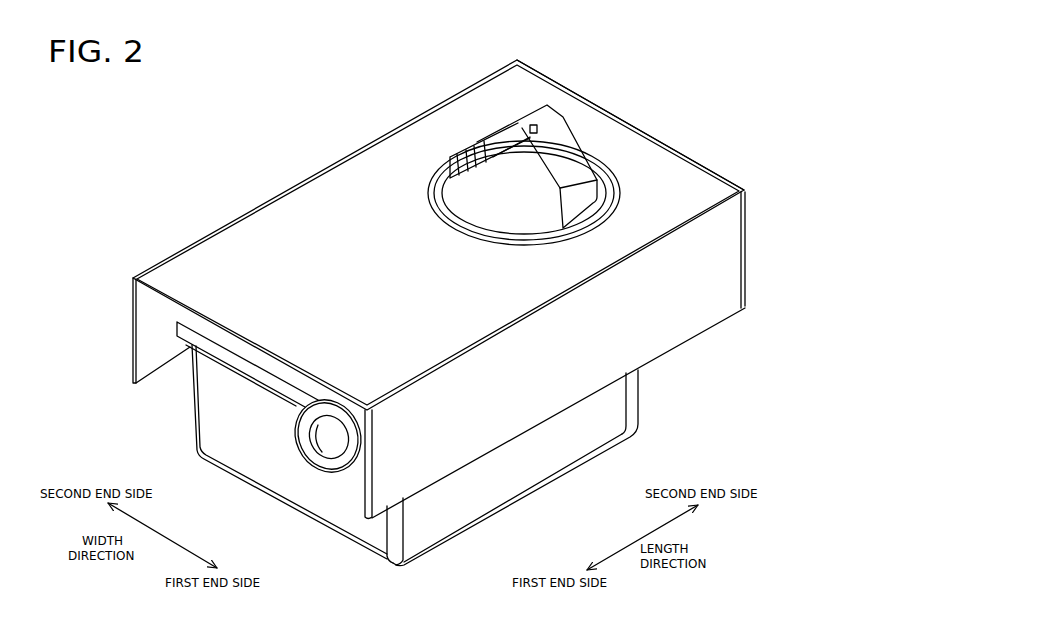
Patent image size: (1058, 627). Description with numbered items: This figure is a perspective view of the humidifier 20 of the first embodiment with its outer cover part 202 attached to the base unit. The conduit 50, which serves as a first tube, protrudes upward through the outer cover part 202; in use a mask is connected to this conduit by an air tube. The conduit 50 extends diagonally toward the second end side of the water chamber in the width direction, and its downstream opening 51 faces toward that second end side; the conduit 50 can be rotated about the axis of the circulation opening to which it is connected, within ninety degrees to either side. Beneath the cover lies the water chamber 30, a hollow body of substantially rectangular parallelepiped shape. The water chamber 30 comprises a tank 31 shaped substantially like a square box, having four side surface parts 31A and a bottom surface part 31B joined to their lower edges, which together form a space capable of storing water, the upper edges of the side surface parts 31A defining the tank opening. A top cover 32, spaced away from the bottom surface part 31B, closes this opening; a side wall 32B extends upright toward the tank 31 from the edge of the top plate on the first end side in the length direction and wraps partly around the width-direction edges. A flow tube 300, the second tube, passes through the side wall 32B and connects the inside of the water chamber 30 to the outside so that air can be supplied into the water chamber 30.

The humidifier 20 is at (322, 122).
The outer cover part 202 is at (712, 170).
The conduit 50 is at (568, 128).
The opening 51 is at (478, 171).
The top cover 32 is at (177, 322).
The side wall 32B is at (227, 367).
The tank 31 is at (255, 487).
The flow tube 300 is at (350, 473).
The side surface part 31A is at (367, 538).
The bottom surface part 31B is at (427, 553).
The water chamber 30 is at (499, 526).